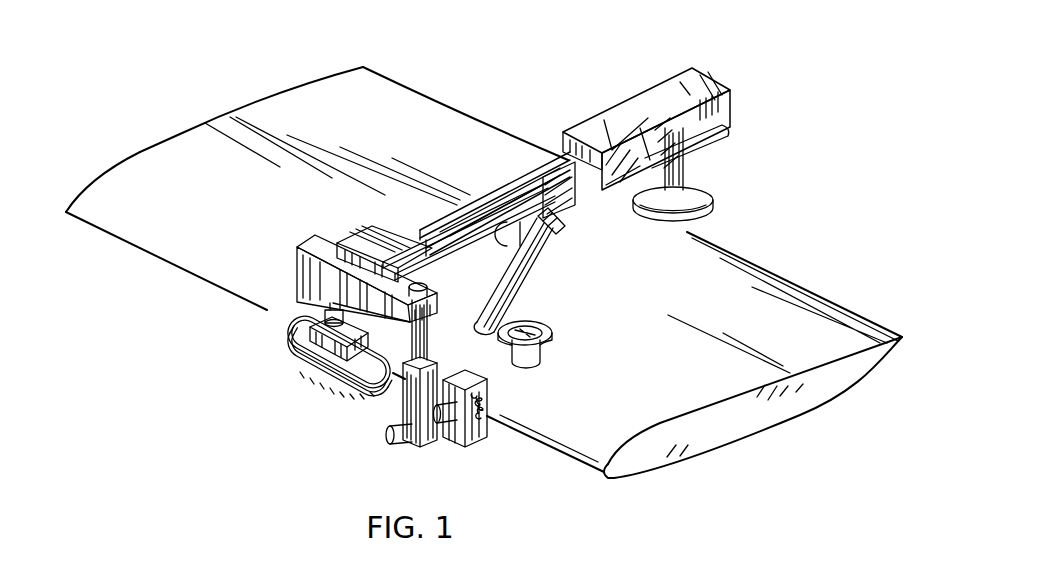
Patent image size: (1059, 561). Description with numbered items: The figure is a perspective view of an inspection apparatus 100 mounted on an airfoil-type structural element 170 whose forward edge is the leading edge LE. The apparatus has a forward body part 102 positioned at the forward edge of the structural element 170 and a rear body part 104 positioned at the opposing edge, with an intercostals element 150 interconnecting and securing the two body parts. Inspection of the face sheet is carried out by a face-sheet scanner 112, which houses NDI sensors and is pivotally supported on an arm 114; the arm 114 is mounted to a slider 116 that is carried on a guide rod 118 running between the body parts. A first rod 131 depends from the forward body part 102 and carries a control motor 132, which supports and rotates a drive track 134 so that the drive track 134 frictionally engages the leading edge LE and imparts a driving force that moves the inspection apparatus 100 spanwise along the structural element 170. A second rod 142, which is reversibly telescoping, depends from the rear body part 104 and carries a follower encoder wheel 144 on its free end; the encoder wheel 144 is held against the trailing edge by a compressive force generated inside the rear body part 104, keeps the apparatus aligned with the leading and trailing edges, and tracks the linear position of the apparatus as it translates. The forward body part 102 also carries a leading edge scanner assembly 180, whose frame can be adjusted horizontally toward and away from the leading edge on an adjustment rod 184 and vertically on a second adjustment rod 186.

The inspection apparatus 100 is at (533, 132).
The forward body part 102 is at (289, 243).
The rear body part 104 is at (718, 67).
The face-sheet scanner 112 is at (548, 343).
The arm 114 is at (530, 272).
The slider 116 is at (558, 229).
The guide rod 118 is at (480, 253).
The first rod 131 is at (317, 315).
The control motor 132 is at (292, 348).
The drive track 134 is at (330, 387).
The second rod 142 is at (683, 170).
The follower encoder wheel 144 is at (713, 213).
The intercostals element 150 is at (497, 202).
The structural element 170 is at (183, 150).
The leading edge scanner assembly 180 is at (491, 441).
The adjustment rod 184 is at (392, 449).
The second adjustment rod 186 is at (417, 333).
The leading edge LE is at (158, 270).